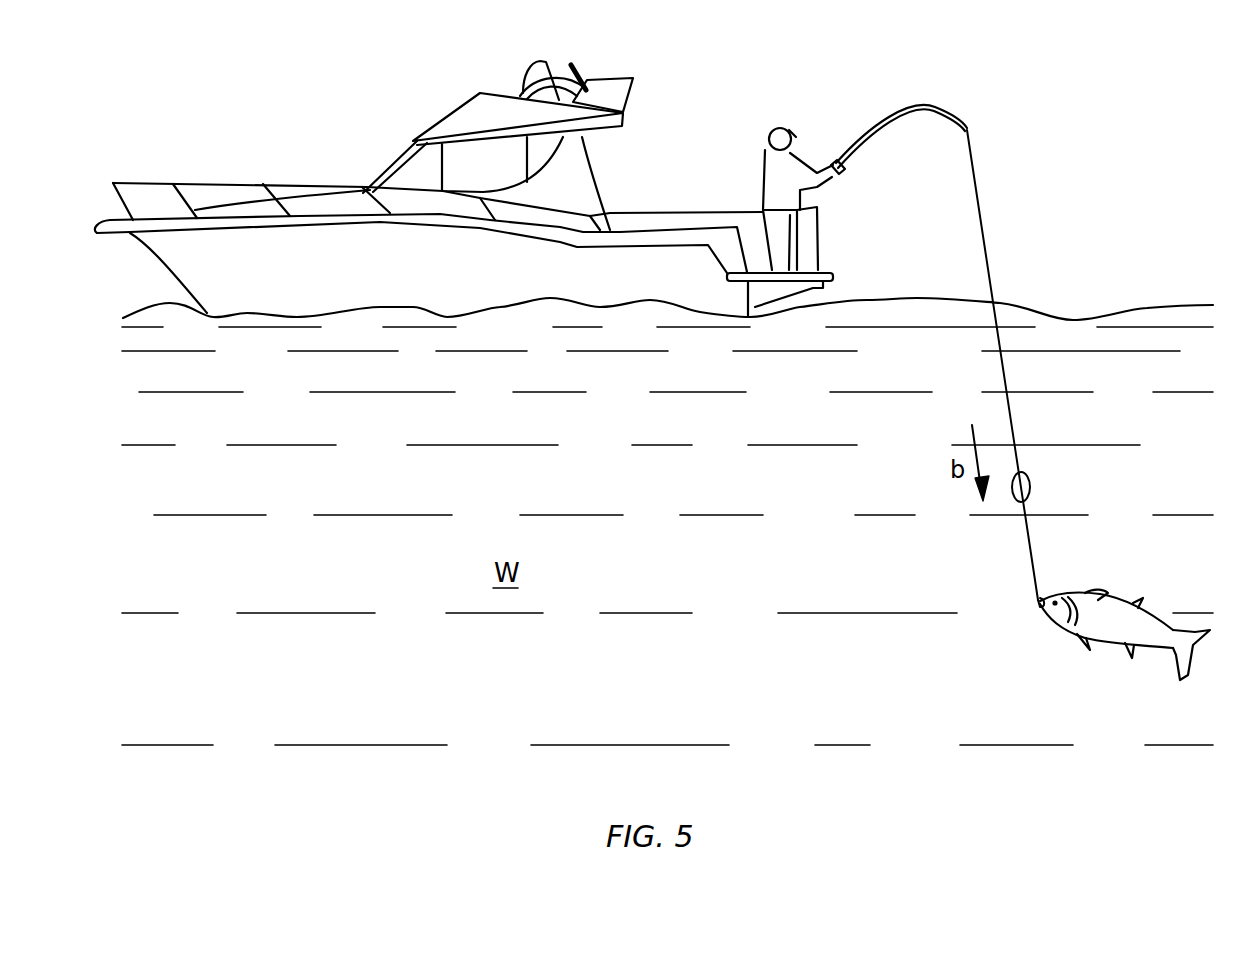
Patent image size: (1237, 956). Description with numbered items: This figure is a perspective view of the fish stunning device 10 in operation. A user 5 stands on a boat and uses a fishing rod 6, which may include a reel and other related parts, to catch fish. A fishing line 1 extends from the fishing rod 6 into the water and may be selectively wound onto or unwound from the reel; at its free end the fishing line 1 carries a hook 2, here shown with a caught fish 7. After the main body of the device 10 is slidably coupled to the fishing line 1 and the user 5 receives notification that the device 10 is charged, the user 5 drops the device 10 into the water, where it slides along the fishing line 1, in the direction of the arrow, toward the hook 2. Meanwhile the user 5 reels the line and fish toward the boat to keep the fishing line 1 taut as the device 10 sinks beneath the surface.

The fishing line 1 is at (982, 222).
The hook 2 is at (1040, 602).
The user 5 is at (780, 127).
The fishing rod 6 is at (895, 122).
The fish 7 is at (1108, 643).
The device 10 is at (1030, 488).